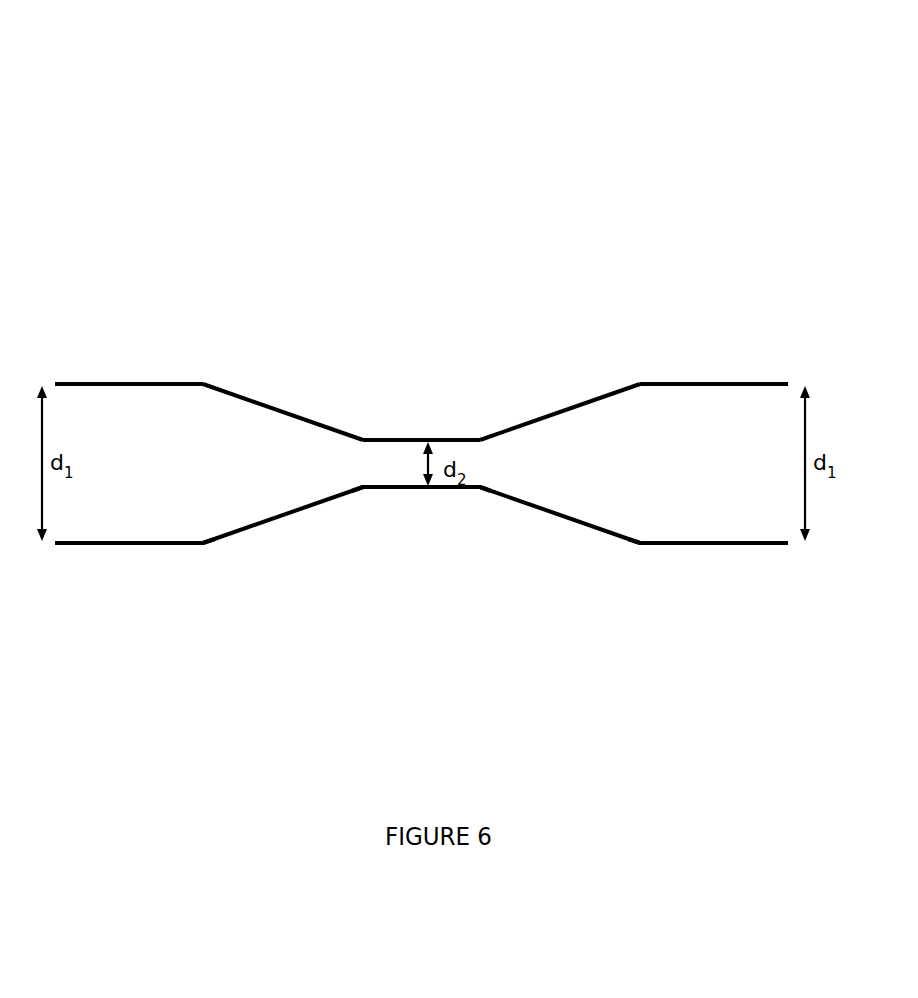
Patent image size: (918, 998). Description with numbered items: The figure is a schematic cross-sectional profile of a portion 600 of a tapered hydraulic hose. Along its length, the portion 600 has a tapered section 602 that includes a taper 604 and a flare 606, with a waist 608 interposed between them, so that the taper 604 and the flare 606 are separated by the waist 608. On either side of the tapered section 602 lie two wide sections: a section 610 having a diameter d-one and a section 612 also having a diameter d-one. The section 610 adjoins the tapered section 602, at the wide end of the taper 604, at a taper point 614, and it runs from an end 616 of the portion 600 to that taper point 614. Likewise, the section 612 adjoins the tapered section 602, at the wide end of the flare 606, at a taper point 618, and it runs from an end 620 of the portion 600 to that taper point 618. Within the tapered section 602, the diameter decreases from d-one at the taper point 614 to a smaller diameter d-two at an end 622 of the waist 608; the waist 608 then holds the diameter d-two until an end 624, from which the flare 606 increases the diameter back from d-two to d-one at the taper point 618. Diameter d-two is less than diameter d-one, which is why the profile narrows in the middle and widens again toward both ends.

The portion of tapered hydraulic hose 600 is at (189, 54).
The tapered section 602 is at (193, 197).
The taper 604 is at (358, 310).
The flare 606 is at (488, 310).
The waist 608 is at (488, 310).
The section 610 is at (45, 310).
The section 612 is at (652, 310).
The taper point 614 is at (203, 562).
The end 616 is at (56, 562).
The taper point 618 is at (652, 562).
The end 620 is at (788, 562).
The end of waist 622 is at (364, 508).
The end of waist 624 is at (478, 505).